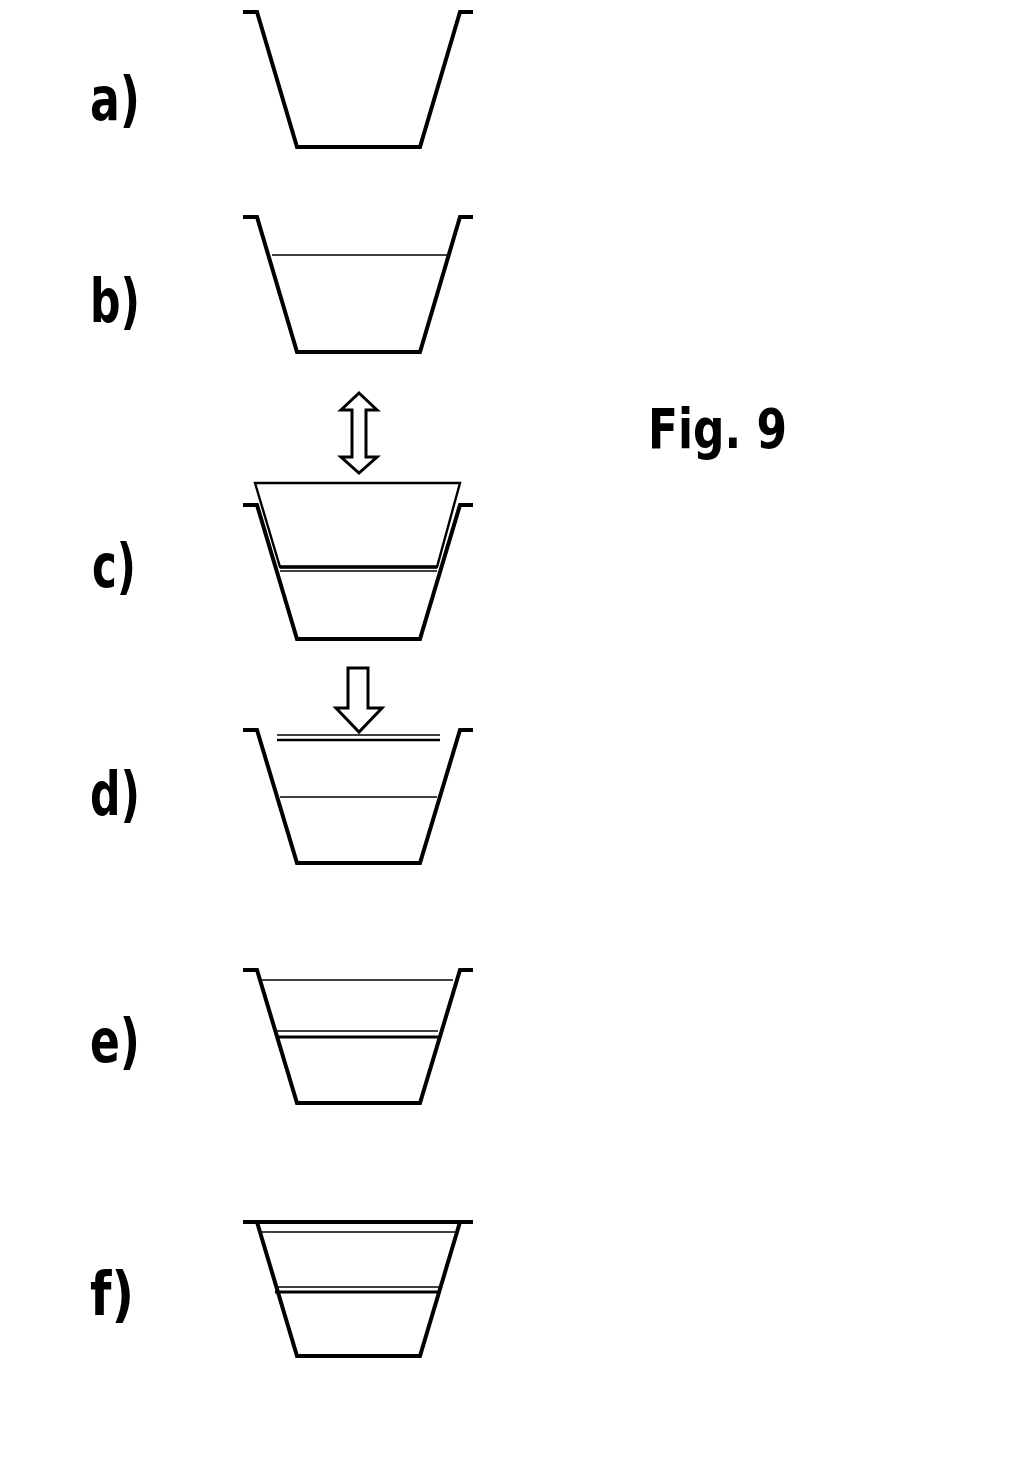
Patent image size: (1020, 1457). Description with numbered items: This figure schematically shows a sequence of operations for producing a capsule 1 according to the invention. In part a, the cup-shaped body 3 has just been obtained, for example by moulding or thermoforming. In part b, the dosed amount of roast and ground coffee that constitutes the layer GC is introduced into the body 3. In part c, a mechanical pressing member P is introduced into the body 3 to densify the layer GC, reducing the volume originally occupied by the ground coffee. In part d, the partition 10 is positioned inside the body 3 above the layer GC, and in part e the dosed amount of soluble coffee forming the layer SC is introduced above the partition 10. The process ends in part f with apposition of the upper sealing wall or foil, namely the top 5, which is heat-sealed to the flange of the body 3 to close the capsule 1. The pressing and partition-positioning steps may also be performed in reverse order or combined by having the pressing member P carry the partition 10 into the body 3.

The capsule 1 is at (408, 1207).
The body 3 is at (458, 91).
The top 5 is at (277, 1220).
The partition 10 is at (428, 733).
The layer of roast and ground coffee GC is at (320, 268).
The layer of soluble coffee SC is at (290, 998).
The pressing member P is at (275, 495).